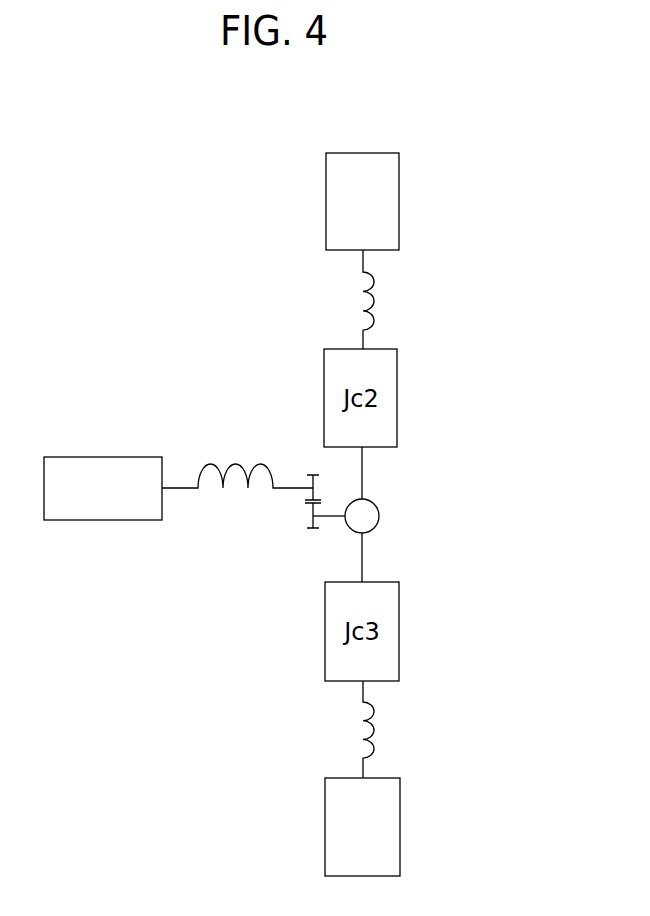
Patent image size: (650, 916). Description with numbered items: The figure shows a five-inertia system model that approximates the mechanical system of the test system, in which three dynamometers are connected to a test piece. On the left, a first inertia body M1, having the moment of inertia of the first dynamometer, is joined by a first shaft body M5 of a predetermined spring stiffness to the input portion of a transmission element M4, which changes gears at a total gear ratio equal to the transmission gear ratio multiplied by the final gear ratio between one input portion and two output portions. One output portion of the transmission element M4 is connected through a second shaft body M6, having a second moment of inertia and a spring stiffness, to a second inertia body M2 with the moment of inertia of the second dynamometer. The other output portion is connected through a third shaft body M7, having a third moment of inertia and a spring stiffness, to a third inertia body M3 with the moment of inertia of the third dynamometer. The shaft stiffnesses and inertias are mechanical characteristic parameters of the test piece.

The first inertia body M1 is at (121, 457).
The second inertia body M2 is at (395, 197).
The third inertia body M3 is at (395, 828).
The transmission element M4 is at (412, 488).
The first shaft body M5 is at (237, 463).
The second shaft body M6 is at (439, 335).
The third shaft body M7 is at (445, 677).